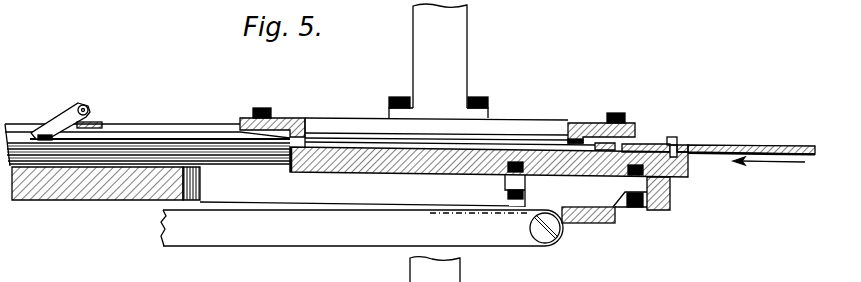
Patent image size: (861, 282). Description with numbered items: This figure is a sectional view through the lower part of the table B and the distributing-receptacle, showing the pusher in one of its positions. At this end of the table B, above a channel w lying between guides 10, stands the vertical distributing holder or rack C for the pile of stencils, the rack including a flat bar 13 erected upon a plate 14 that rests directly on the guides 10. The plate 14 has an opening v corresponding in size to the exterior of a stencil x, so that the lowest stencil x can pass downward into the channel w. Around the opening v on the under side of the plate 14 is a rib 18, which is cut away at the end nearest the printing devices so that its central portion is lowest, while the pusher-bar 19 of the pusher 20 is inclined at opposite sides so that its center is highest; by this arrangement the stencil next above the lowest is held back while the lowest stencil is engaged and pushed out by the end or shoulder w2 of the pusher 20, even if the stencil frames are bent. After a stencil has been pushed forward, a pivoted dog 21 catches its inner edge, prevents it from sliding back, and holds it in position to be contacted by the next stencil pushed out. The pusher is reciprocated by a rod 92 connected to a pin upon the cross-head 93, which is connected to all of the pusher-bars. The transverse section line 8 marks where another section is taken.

The pivoted dog 21 is at (64, 112).
The channel w is at (118, 130).
The stencil x is at (158, 137).
The section line 8- 8 is at (309, 256).
The flat bar 13 is at (440, 56).
The distributing holder or rack C is at (468, 60).
The opening v is at (533, 121).
The rib 18 is at (587, 140).
The end or shoulder of the pusher w2 is at (600, 143).
The plate 14 is at (634, 126).
The guides 10 is at (672, 137).
The pusher 20 is at (773, 145).
The pusher-bar 19 is at (690, 178).
The rod 92 is at (362, 228).
The cross-head 93 is at (587, 224).
The table B is at (669, 212).